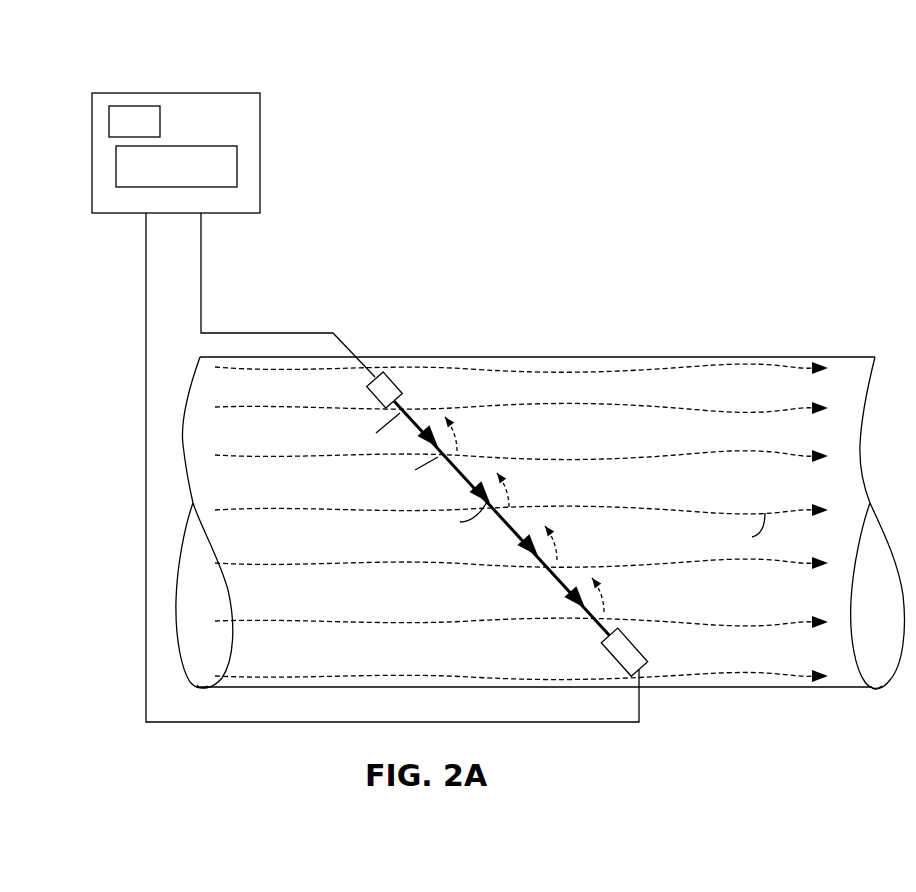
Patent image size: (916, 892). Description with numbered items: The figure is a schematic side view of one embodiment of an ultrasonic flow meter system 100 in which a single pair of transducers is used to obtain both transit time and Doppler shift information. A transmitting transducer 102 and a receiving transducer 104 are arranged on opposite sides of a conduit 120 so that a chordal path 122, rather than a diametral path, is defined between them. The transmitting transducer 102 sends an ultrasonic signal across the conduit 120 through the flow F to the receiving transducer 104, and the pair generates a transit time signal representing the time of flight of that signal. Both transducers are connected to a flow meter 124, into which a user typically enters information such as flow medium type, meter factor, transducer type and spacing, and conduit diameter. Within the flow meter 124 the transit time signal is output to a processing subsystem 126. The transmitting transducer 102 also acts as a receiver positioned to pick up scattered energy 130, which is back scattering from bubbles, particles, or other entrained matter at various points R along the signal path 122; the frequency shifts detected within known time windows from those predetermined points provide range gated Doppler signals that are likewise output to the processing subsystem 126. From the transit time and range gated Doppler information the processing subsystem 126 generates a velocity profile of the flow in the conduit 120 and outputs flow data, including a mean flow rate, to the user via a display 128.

The ultrasonic flow meter system 100 is at (440, 292).
The transmitting transducer 102 is at (388, 378).
The receiving transducer 104 is at (626, 650).
The conduit 120 is at (662, 338).
The chordal path 122 is at (398, 410).
The flow meter 124 is at (261, 108).
The processing subsystem 126 is at (132, 106).
The display 128 is at (237, 163).
The scattered energy 130 is at (481, 512).